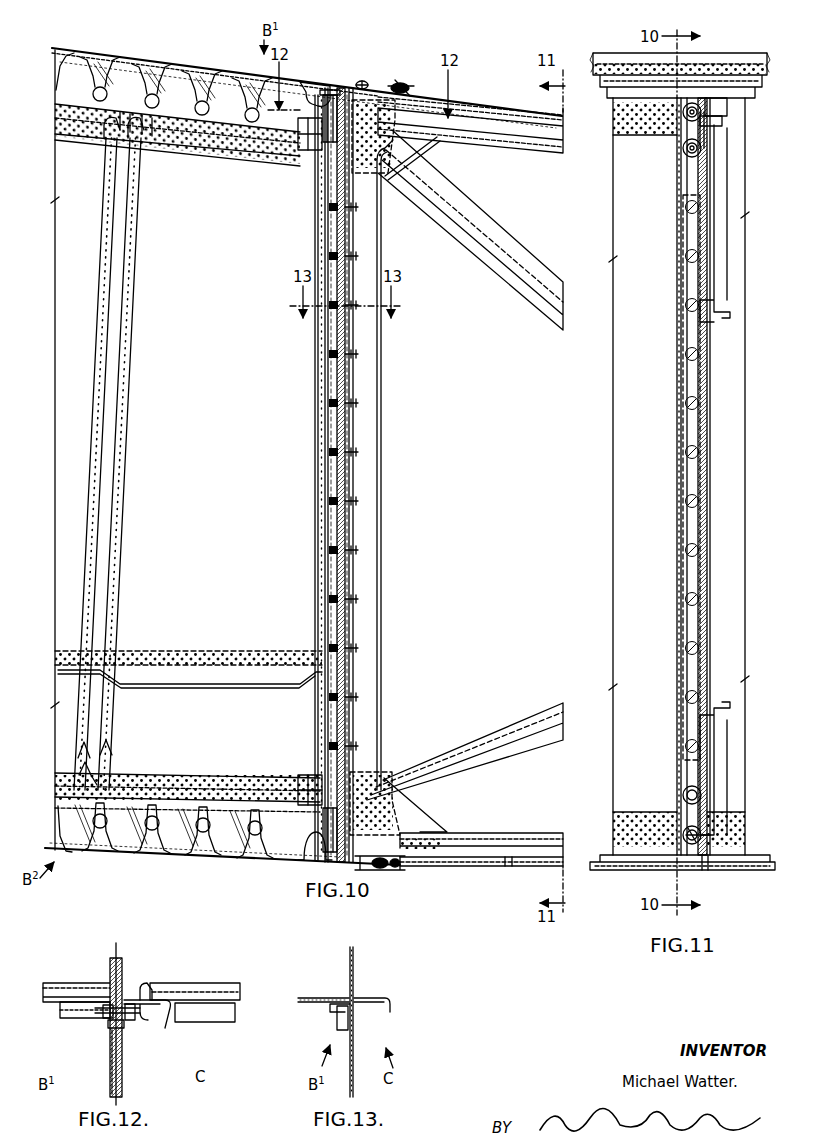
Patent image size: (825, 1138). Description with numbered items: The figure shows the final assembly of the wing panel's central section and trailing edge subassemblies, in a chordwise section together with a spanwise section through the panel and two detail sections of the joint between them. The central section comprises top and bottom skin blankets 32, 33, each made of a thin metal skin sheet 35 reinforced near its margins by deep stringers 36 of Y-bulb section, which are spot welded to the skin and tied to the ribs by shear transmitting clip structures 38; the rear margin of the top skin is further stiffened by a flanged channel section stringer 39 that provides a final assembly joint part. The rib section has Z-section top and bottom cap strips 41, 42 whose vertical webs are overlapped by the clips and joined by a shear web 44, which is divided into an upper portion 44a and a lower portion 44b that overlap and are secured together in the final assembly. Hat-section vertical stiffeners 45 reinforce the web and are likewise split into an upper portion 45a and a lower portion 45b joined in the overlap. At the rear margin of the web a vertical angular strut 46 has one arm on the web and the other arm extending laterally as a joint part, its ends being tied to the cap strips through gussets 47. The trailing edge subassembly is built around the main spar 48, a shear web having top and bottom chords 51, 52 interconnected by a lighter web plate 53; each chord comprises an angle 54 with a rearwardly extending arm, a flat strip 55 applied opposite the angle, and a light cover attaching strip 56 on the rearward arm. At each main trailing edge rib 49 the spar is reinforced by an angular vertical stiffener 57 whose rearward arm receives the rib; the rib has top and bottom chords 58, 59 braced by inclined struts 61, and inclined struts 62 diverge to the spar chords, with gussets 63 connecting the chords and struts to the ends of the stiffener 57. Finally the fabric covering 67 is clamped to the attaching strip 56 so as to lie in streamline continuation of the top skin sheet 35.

In FIG. 10, the top skin blanket 32 is at (152, 64).
In FIG. 10, the bottom skin blanket 33 is at (168, 862).
In FIG. 10, the skin sheet 35 is at (188, 78).
In FIG. 10, the stringers of Y-bulb section 36 is at (228, 85).
In FIG. 10, the clip structure 38 is at (108, 82).
In FIG. 10, the flanged channel section stringer 39 is at (320, 84).
In FIG. 10, the top cap strip 41 is at (280, 128).
In FIG. 12, the top cap strip 41 is at (58, 994).
In FIG. 10, the bottom cap strip 42 is at (205, 795).
In FIG. 10, the shear web 44 is at (232, 436).
In FIG. 13, the shear web 44 is at (316, 998).
In FIG. 10, the upper web portion 44a is at (240, 561).
In FIG. 10, the lower web portion 44b is at (222, 728).
In FIG. 10, the vertical stiffener 45 is at (128, 380).
In FIG. 10, the upper stiffener portion 45a is at (98, 578).
In FIG. 10, the lower stiffener portion 45b is at (80, 772).
In FIG. 10, the vertical strut 46 is at (314, 398).
In FIG. 12, the vertical strut 46 is at (105, 1022).
In FIG. 13, the vertical strut 46 is at (334, 1014).
In FIG. 10, the gusset 47 is at (300, 140).
In FIG. 12, the gusset 47 is at (66, 1012).
In FIG. 10, the main spar 48 is at (346, 433).
In FIG. 11, the main spar 48 is at (612, 462).
In FIG. 12, the main spar 48 is at (123, 970).
In FIG. 13, the main spar 48 is at (355, 972).
In FIG. 10, the main trailing edge rib 49 is at (528, 840).
In FIG. 11, the main trailing edge rib 49 is at (724, 122).
In FIG. 12, the main trailing edge rib 49 is at (220, 984).
In FIG. 10, the top spar chord 51 is at (363, 80).
In FIG. 10, the bottom spar chord 52 is at (365, 870).
In FIG. 12, the web plate 53 is at (117, 958).
In FIG. 13, the web plate 53 is at (353, 1040).
In FIG. 10, the chord angle 54 is at (376, 86).
In FIG. 12, the chord angle 54 is at (124, 1070).
In FIG. 10, the flat strip 55 is at (338, 92).
In FIG. 12, the flat strip 55 is at (110, 1052).
In FIG. 10, the cover attaching strip 56 is at (402, 84).
In FIG. 10, the vertical stiffener 57 is at (382, 535).
In FIG. 11, the vertical stiffener 57 is at (690, 434).
In FIG. 12, the vertical stiffener 57 is at (152, 1010).
In FIG. 13, the vertical stiffener 57 is at (378, 998).
In FIG. 10, the top chord of trailing edge rib 58 is at (507, 114).
In FIG. 11, the top chord of trailing edge rib 58 is at (728, 106).
In FIG. 12, the top chord of trailing edge rib 58 is at (220, 1022).
In FIG. 10, the bottom chord of trailing edge rib 59 is at (508, 866).
In FIG. 11, the bottom chord of trailing edge rib 59 is at (703, 870).
In FIG. 10, the inclined strut 61 is at (478, 866).
In FIG. 10, the inclined brace strut 62 is at (522, 278).
In FIG. 11, the inclined brace strut 62 is at (728, 250).
In FIG. 12, the inclined brace strut 62 is at (170, 1000).
In FIG. 10, the gusset 63 is at (436, 140).
In FIG. 11, the gusset 63 is at (706, 145).
In FIG. 10, the fabric covering 67 is at (468, 110).